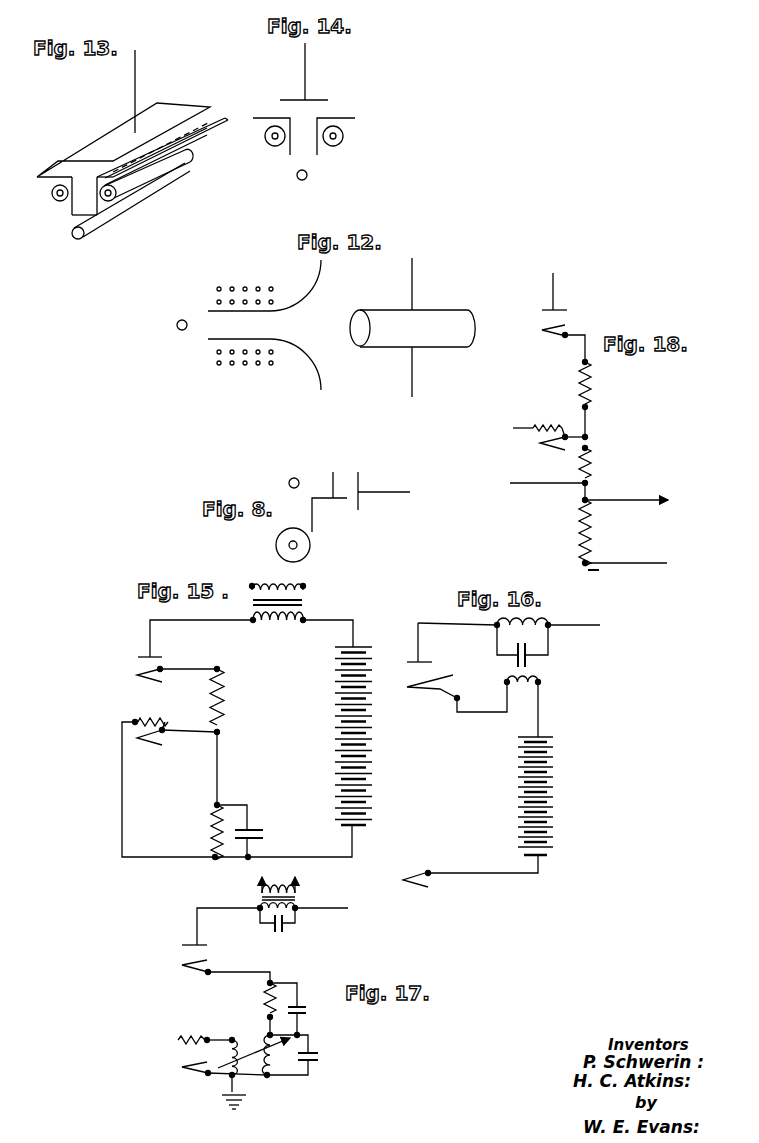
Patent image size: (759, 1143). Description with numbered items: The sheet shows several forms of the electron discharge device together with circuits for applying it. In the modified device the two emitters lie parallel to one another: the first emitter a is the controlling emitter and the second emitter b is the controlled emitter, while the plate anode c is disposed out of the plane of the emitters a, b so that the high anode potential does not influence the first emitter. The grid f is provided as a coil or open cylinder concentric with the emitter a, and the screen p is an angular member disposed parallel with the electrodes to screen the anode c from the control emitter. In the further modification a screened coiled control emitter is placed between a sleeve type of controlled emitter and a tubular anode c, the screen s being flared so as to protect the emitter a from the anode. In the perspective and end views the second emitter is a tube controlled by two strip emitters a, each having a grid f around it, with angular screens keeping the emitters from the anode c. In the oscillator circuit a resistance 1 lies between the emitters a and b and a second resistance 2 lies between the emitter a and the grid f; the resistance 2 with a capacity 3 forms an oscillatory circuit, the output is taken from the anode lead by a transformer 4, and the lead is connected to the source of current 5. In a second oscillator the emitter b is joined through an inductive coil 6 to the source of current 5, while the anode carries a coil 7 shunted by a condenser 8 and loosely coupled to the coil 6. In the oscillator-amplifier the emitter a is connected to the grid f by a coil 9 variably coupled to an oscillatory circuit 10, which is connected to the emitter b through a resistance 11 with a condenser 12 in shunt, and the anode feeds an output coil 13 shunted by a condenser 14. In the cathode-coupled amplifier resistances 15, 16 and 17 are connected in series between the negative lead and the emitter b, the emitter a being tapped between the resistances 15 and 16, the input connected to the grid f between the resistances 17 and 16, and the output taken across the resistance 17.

In FIG. 13, the first emitter a is at (62, 196).
In FIG. 14, the first emitter a is at (273, 143).
In FIG. 12, the first emitter a is at (217, 353).
In FIG. 18, the first emitter a is at (553, 442).
In FIG. 8, the first emitter a is at (297, 547).
In FIG. 15, the first emitter a is at (153, 736).
In FIG. 16, the first emitter a is at (415, 874).
In FIG. 17, the first emitter a is at (197, 1070).
In FIG. 13, the second emitter b is at (88, 236).
In FIG. 14, the second emitter b is at (298, 180).
In FIG. 12, the second emitter b is at (177, 328).
In FIG. 18, the second emitter b is at (562, 330).
In FIG. 8, the second emitter b is at (297, 478).
In FIG. 15, the second emitter b is at (153, 672).
In FIG. 16, the second emitter b is at (440, 688).
In FIG. 17, the second emitter b is at (192, 963).
In FIG. 13, the anode c is at (155, 127).
In FIG. 14, the anode c is at (292, 98).
In FIG. 12, the anode c is at (417, 328).
In FIG. 18, the anode c is at (545, 308).
In FIG. 8, the anode c is at (362, 480).
In FIG. 15, the anode c is at (145, 653).
In FIG. 16, the anode c is at (408, 660).
In FIG. 17, the anode c is at (192, 943).
In FIG. 13, the grid f is at (56, 198).
In FIG. 14, the grid f is at (268, 140).
In FIG. 12, the grid f is at (243, 366).
In FIG. 18, the grid f is at (540, 428).
In FIG. 8, the grid f is at (277, 543).
In FIG. 15, the grid f is at (147, 718).
In FIG. 17, the grid f is at (195, 1038).
In FIG. 12, the screen s is at (302, 300).
In FIG. 8, the screen p is at (329, 491).
In FIG. 15, the resistance 1 is at (225, 682).
In FIG. 15, the second resistance 2 is at (213, 832).
In FIG. 15, the capacity 3 is at (252, 828).
In FIG. 15, the transformer 4 is at (303, 605).
In FIG. 15, the source of current 5 is at (338, 727).
In FIG. 16, the source of current 5 is at (548, 800).
In FIG. 16, the inductive coil 6 is at (542, 680).
In FIG. 16, the coil 7 is at (530, 625).
In FIG. 16, the condenser 8 is at (527, 653).
In FIG. 17, the coil 9 is at (242, 1068).
In FIG. 17, the oscillatory circuit 10 is at (287, 1058).
In FIG. 17, the resistance 11 is at (278, 992).
In FIG. 17, the condenser 12 is at (300, 1005).
In FIG. 17, the output coil 13 is at (295, 898).
In FIG. 17, the condenser 14 is at (295, 923).
In FIG. 18, the resistance 15 is at (578, 383).
In FIG. 18, the resistance 16 is at (588, 467).
In FIG. 18, the resistance 17 is at (577, 523).